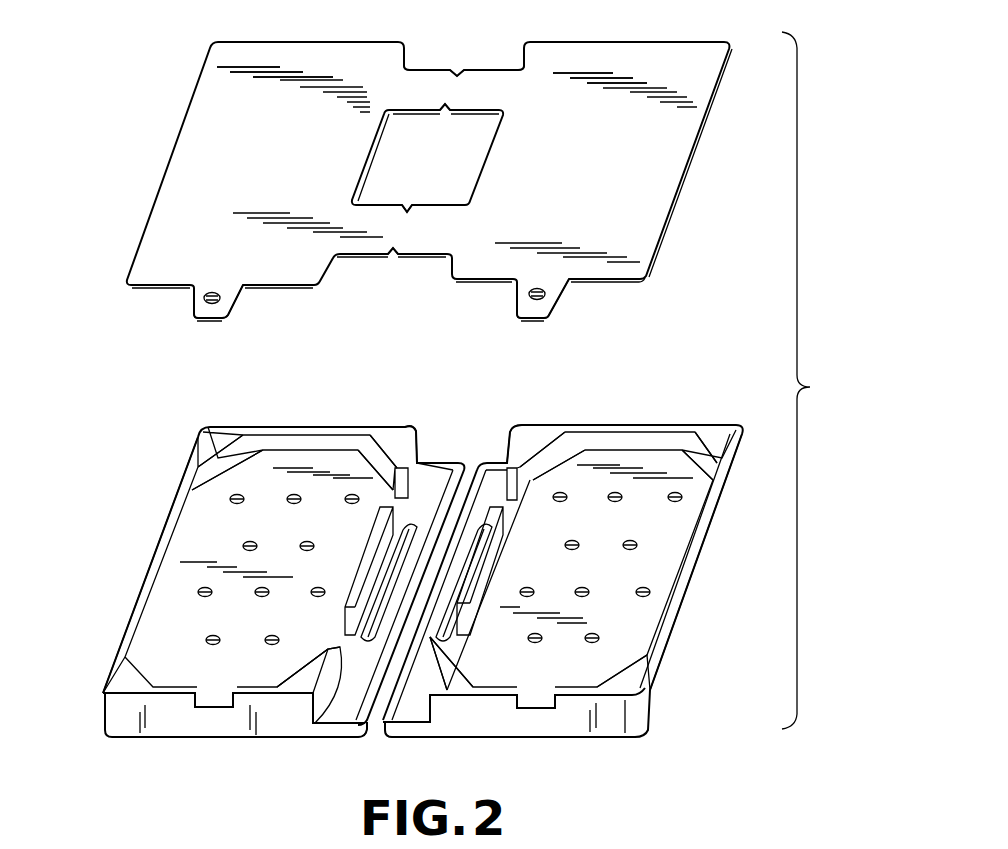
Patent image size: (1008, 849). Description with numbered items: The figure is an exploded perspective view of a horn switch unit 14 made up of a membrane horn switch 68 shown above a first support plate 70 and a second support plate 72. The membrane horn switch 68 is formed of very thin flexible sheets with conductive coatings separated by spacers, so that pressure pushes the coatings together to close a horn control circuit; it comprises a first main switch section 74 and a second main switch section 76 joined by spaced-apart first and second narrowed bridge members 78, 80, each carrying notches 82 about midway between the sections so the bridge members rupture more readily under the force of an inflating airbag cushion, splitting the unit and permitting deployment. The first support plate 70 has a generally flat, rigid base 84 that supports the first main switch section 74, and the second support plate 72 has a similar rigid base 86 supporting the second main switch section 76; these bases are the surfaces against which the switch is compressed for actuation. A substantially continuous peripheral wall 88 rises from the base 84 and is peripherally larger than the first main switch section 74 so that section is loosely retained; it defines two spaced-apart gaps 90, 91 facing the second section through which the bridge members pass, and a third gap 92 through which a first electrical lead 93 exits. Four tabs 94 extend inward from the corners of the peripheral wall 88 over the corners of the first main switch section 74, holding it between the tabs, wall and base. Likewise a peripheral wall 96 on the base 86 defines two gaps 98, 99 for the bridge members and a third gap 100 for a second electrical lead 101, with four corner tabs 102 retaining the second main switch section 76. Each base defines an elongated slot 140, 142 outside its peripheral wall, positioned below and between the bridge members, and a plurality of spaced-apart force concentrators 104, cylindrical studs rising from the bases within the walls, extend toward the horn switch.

The horn switch unit 14 is at (833, 380).
The membrane horn switch 68 is at (634, 26).
The first support plate 70 is at (250, 422).
The second support plate 72 is at (645, 382).
The first main switch section 74 is at (240, 158).
The second main switch section 76 is at (568, 165).
The first narrowed bridge member 78 is at (493, 68).
The second narrowed bridge member 80 is at (358, 206).
The notches 82 is at (458, 73).
The base of first support plate 84 is at (334, 741).
The base of second support plate 86 is at (405, 741).
The peripheral wall of first support plate 88 is at (136, 608).
The first gap 90 is at (412, 446).
The second gap 91 is at (326, 651).
The third gap 92 is at (210, 709).
The first electrical lead 93 is at (212, 317).
The tabs 94 is at (209, 449).
The peripheral wall of second support plate 96 is at (718, 498).
The first gap 98 is at (514, 501).
The second gap 99 is at (440, 642).
The third gap 100 is at (537, 709).
The second electrical lead 101 is at (538, 316).
The tabs 102 is at (545, 433).
The force concentrators 104 is at (236, 505).
The elongated slot 140 is at (424, 526).
The elongated slot 142 is at (487, 526).